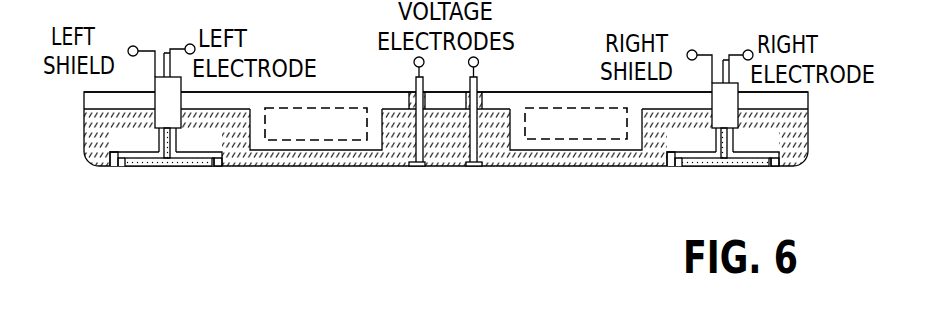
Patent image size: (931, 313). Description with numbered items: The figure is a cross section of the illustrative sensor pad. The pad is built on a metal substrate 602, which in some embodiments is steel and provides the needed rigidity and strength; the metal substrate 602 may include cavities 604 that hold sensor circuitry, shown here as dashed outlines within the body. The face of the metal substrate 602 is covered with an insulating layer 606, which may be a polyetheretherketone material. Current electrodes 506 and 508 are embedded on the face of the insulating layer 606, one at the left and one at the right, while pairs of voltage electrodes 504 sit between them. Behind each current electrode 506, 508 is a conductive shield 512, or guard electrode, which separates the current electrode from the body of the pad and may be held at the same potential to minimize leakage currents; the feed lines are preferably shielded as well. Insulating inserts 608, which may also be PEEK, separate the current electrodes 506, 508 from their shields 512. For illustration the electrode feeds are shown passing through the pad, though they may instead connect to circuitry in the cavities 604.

The voltage electrodes 504 is at (473, 168).
The current electrode 506 is at (175, 167).
The current electrode 508 is at (733, 168).
The conductive shield 512 is at (123, 158).
The metal substrate 602 is at (522, 92).
The cavities 604 is at (303, 140).
The insulating layer 606 is at (350, 166).
The insulating inserts 608 is at (218, 167).